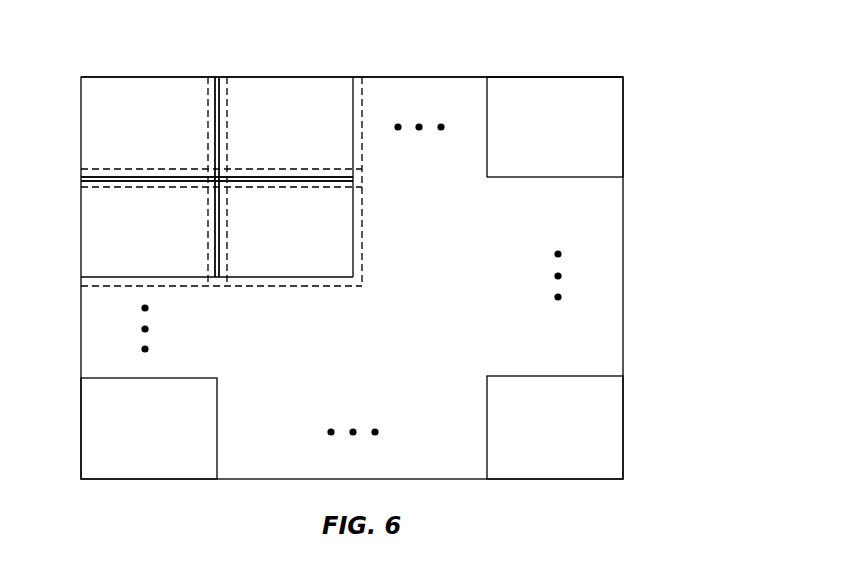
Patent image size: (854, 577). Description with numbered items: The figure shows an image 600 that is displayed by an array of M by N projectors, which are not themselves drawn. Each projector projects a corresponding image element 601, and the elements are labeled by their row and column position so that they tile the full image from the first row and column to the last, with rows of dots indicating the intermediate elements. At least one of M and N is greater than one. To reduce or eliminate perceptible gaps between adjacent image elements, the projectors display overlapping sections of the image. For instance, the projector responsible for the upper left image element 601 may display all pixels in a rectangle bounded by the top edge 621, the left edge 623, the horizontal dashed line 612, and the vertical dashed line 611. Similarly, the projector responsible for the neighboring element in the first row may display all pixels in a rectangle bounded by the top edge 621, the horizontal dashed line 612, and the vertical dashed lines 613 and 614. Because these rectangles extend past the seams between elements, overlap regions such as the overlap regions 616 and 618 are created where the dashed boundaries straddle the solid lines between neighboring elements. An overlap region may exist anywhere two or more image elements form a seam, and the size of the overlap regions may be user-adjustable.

The image 600 is at (745, 121).
The image element 601 is at (115, 136).
The vertical dashed line 611 is at (228, 93).
The horizontal dashed line 612 is at (102, 189).
The vertical dashed line 613 is at (207, 93).
The vertical dashed line 614 is at (363, 92).
The overlap region 616 is at (228, 290).
The overlap region 618 is at (366, 170).
The top edge 621 is at (128, 76).
The left edge 623 is at (102, 168).